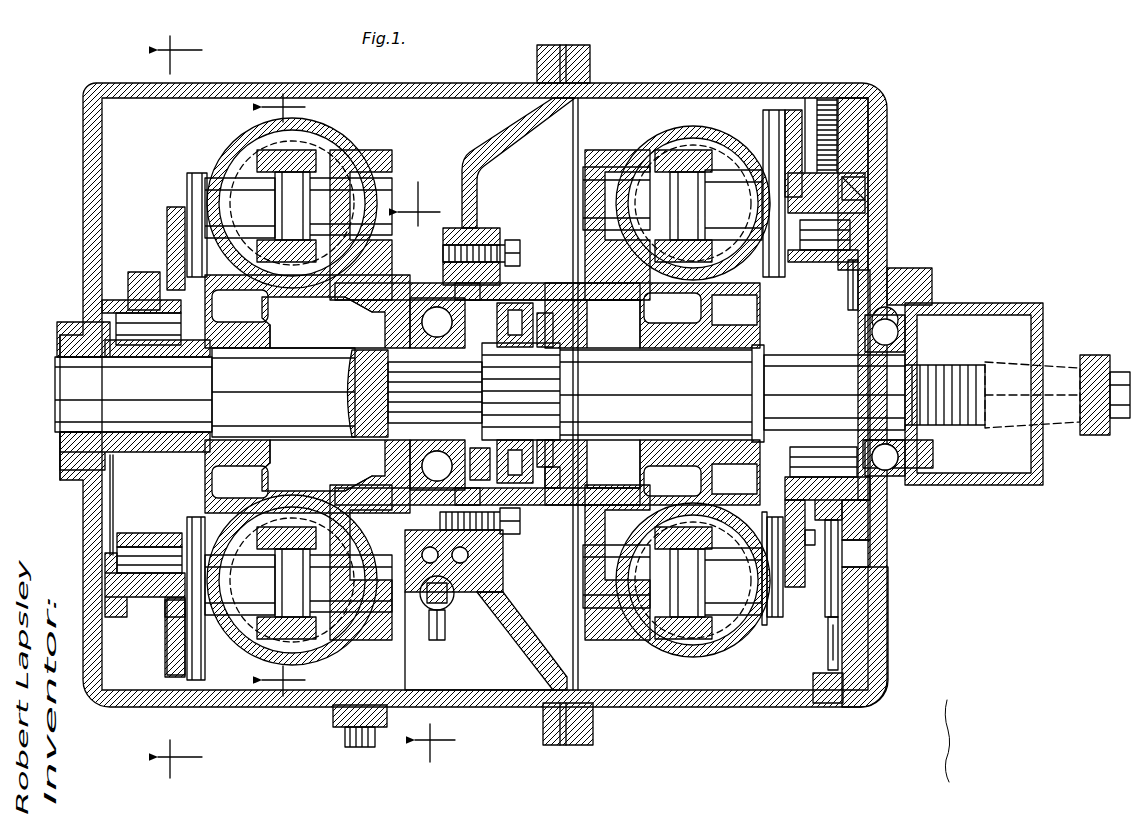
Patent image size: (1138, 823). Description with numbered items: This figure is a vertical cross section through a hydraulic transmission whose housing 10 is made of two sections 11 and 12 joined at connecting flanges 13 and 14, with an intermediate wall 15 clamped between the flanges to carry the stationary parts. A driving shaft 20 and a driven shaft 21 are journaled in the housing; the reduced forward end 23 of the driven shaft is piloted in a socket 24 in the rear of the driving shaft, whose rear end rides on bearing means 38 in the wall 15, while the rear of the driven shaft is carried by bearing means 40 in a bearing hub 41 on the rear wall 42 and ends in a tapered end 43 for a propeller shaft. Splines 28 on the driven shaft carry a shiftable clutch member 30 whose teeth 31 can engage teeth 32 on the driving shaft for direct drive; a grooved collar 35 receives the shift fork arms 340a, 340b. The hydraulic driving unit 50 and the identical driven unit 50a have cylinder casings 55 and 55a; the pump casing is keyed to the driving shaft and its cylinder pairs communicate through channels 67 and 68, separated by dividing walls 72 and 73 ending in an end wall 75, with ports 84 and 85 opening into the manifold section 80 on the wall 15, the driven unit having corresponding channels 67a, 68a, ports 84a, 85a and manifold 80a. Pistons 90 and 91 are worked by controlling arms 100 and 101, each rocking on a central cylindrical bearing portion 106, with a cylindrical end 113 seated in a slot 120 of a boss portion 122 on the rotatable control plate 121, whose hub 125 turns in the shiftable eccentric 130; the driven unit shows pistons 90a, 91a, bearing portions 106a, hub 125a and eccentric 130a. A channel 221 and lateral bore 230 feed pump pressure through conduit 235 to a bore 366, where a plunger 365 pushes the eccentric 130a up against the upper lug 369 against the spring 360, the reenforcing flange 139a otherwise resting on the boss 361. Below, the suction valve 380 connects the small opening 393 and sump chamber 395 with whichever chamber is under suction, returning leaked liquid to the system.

The housing 10 is at (78, 166).
The housing section 11 is at (215, 88).
The rear casing section 12 is at (722, 88).
The connecting flange 13 is at (540, 54).
The connecting flange 14 is at (590, 50).
The intermediate wall 15 is at (520, 132).
The driving shaft 20 is at (160, 418).
The driven shaft 21 is at (800, 372).
The forward end of driven shaft 23 is at (465, 386).
The socket 24 is at (352, 380).
The splines 28 is at (540, 396).
The clutch member 30 is at (528, 488).
The clutch teeth 31 is at (550, 490).
The clutch teeth 32 is at (478, 467).
The grooved collar 35 is at (540, 468).
The bearing means 38 is at (440, 292).
The bearing means 40 is at (892, 334).
The bearing hub 41 is at (893, 268).
The rear wall 42 is at (878, 612).
The tapered end 43 is at (1048, 362).
The hydraulic driving unit 50 is at (232, 148).
The hydraulic driven unit 50a is at (735, 124).
The cylinder casing 55 is at (330, 152).
The cylinder casing 55a is at (600, 152).
The channel 67 is at (307, 311).
The channel 67a is at (652, 315).
The channel 68 is at (307, 476).
The channel 68a is at (652, 472).
The dividing wall 72 is at (330, 338).
The dividing wall 73 is at (325, 452).
The end wall 75 is at (402, 455).
The manifold section 80 is at (398, 288).
The manifold section 80a is at (516, 294).
The port 84 is at (350, 318).
The port 84a is at (620, 318).
The port 85 is at (350, 470).
The port 85a is at (610, 482).
The piston 90 is at (232, 160).
The piston 90a is at (648, 140).
The piston 91 is at (262, 640).
The piston 91a is at (655, 642).
The piston controlling arm 100 is at (258, 195).
The piston controlling arm 101 is at (262, 562).
The central cylindrical bearing portion 106 is at (308, 205).
The central cylindrical bearing portion 106a is at (680, 210).
The cylindrical end 113 is at (196, 190).
The slot 120 is at (180, 660).
The control plate 121 is at (178, 510).
The boss portion 122 is at (175, 650).
The hub 125 is at (180, 495).
The hub 125a is at (838, 300).
The shiftable eccentric 130 is at (160, 630).
The shiftable eccentric 130a is at (852, 188).
The reenforcing flange 139a is at (845, 560).
The channel 221 is at (440, 522).
The lateral bore 230 is at (480, 585).
The conduit 235 is at (488, 556).
The shift fork arm 340a is at (608, 272).
The shift fork arm 340b is at (570, 505).
The spring 360 is at (852, 140).
The boss 361 is at (828, 628).
The plunger 365 is at (832, 525).
The bore 366 is at (830, 645).
The upper lug 369 is at (806, 98).
The suction valve 380 is at (440, 610).
The small opening 393 is at (436, 640).
The sump chamber 395 is at (400, 672).